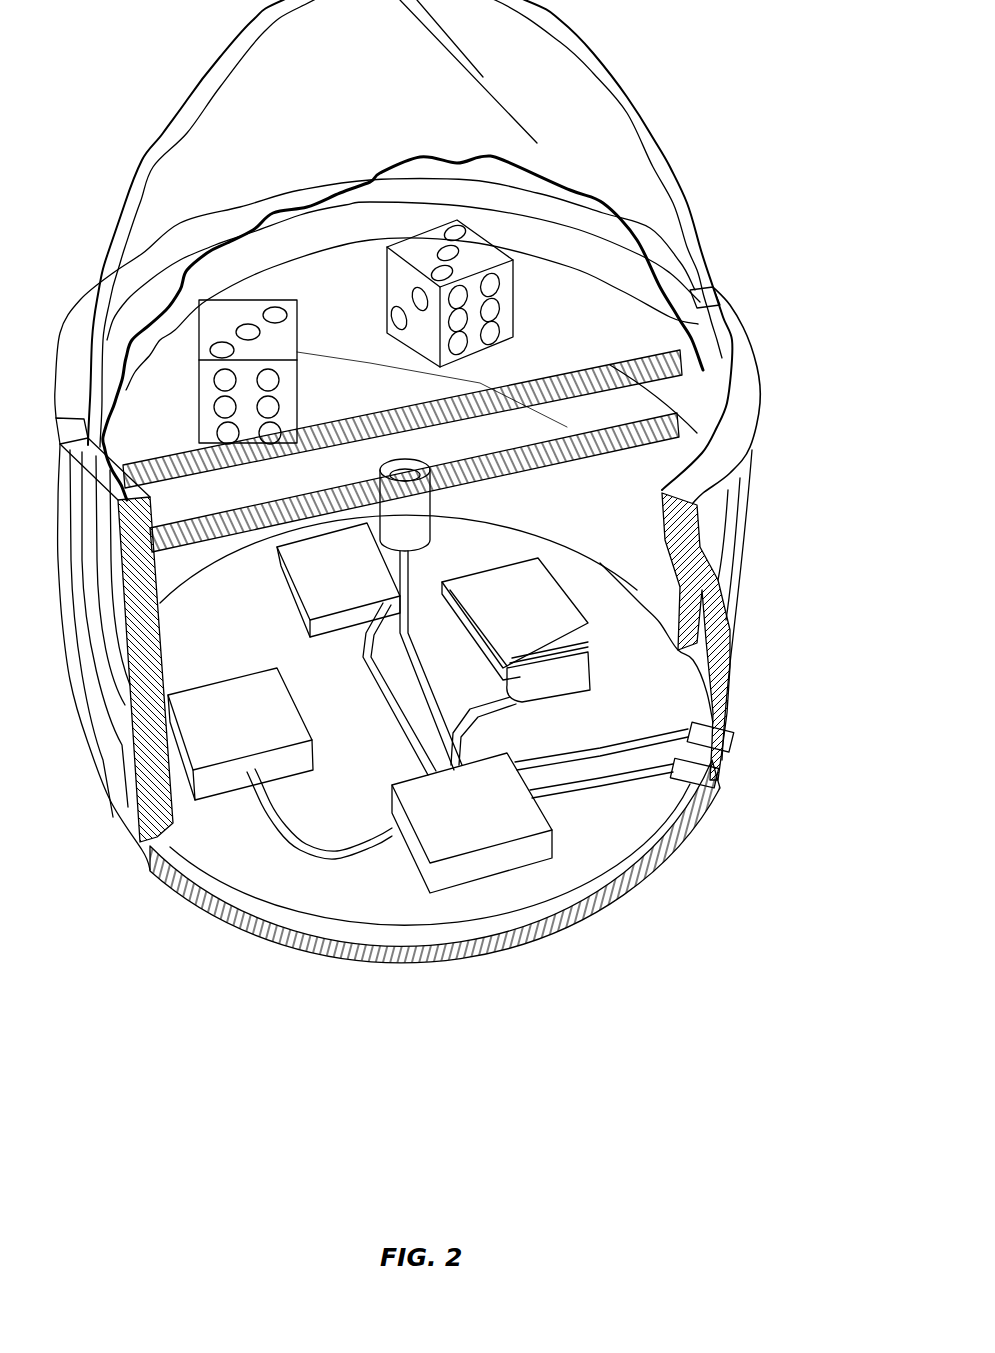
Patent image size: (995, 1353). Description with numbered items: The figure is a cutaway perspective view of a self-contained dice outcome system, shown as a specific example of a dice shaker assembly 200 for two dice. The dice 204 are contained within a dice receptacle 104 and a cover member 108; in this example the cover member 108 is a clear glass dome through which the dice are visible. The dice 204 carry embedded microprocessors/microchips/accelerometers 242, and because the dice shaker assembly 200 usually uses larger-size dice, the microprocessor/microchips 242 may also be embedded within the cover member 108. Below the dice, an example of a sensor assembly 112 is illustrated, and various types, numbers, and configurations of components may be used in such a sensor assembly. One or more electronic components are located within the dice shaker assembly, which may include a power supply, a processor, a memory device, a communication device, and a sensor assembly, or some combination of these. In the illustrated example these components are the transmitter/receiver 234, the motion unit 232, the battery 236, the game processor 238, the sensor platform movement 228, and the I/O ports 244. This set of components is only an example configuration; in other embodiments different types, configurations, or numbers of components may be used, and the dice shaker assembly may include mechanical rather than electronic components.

The dice shaker assembly 200 is at (590, 1135).
The cover member 108 is at (653, 100).
The dice receptacle 104 is at (768, 342).
The sensor assembly 112 is at (228, 978).
The embedded microprocessors/microchips/accelerometers 242 is at (415, 380).
The dice 204 is at (270, 300).
The sensor platform movement 228 is at (430, 522).
The motion unit 232 is at (182, 692).
The transmitter/receiver 234 is at (260, 572).
The battery 236 is at (543, 560).
The game processor 238 is at (552, 828).
The I/O ports 244 is at (735, 750).